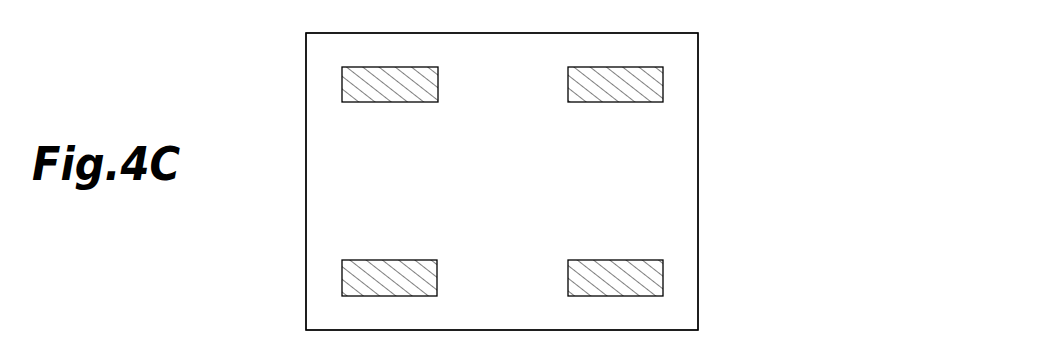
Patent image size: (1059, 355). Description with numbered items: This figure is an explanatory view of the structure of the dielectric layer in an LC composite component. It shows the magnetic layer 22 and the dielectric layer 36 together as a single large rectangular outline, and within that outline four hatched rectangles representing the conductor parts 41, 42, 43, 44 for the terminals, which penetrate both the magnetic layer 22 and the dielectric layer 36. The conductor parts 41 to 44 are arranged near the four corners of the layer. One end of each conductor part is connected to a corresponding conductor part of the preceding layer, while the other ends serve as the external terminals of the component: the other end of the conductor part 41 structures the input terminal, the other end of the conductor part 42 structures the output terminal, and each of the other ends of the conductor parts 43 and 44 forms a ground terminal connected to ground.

The dielectric layer 36 is at (698, 33).
The magnetic layer 22 is at (502, 181).
The conductor part for the terminal 41 is at (342, 278).
The conductor part for the terminal 42 is at (663, 278).
The conductor part for the terminal 43 is at (342, 84).
The conductor part for the terminal 44 is at (663, 84).